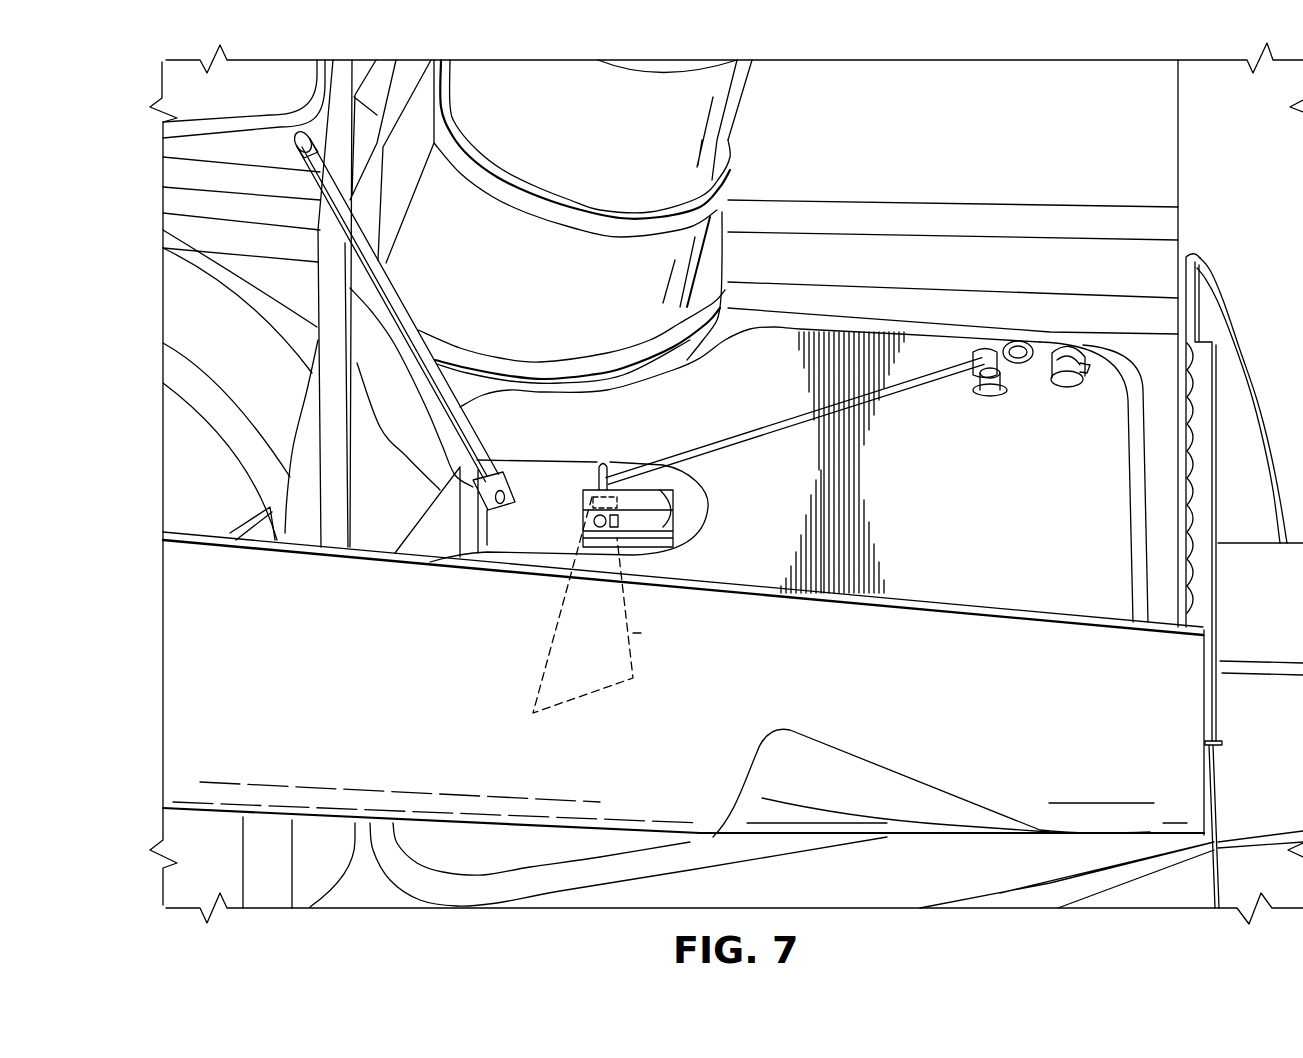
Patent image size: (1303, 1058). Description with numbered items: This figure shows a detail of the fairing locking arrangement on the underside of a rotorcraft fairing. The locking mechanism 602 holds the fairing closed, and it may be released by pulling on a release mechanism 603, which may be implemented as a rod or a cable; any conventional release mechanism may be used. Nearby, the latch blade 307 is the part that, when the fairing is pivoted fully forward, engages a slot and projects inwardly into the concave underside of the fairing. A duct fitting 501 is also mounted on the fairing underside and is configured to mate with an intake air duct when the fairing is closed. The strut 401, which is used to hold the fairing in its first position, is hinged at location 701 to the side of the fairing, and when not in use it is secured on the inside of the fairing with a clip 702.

The duct fitting 501 is at (742, 106).
The strut 401 is at (400, 298).
The hinge location 701 is at (517, 490).
The locking mechanism 602 is at (663, 521).
The release mechanism 603 is at (903, 385).
The clip 702 is at (1062, 352).
The latch blade 307 is at (641, 634).